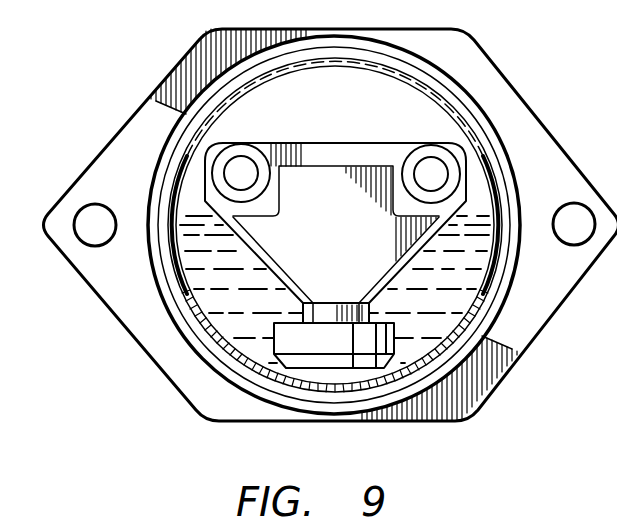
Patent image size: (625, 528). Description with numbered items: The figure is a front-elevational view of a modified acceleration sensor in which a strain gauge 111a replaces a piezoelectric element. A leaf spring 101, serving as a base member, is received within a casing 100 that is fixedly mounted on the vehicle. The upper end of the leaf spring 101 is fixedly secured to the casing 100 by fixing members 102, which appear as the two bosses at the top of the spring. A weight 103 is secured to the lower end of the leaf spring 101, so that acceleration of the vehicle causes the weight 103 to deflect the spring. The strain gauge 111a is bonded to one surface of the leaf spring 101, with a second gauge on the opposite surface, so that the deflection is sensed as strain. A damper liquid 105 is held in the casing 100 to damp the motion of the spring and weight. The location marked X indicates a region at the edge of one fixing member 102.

The casing 100 is at (493, 68).
The leaf spring 101 is at (324, 141).
The fixing members 102 is at (252, 156).
The weight 103 is at (320, 336).
The damper liquid 105 is at (465, 262).
The strain gauge 111a is at (355, 245).
The region X is at (467, 182).